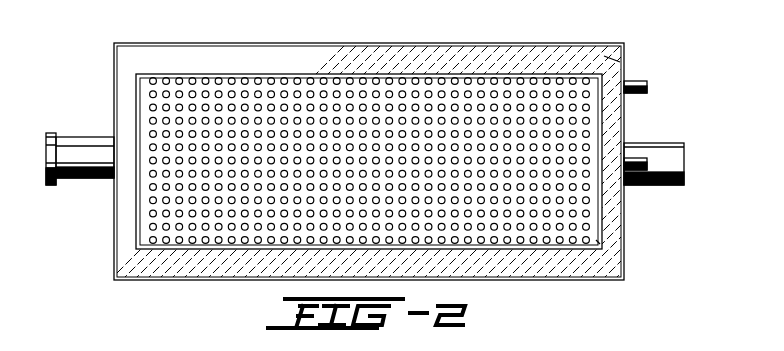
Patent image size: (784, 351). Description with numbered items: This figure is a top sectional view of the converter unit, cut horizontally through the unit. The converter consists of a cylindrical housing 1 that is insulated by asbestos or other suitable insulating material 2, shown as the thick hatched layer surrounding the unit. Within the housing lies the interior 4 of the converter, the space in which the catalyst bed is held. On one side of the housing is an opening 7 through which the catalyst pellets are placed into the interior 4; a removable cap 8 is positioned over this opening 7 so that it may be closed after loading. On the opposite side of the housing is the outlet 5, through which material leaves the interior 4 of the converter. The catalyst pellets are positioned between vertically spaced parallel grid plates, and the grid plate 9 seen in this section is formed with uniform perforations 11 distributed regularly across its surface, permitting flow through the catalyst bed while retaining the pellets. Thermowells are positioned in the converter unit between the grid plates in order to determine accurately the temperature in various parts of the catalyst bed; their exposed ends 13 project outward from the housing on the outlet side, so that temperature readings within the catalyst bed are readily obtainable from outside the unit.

The cylindrical housing 1 is at (135, 43).
The insulating material 2 is at (612, 59).
The interior 4 is at (134, 228).
The outlet 5 is at (690, 157).
The opening 7 is at (83, 178).
The removable cap 8 is at (46, 151).
The grid plate 9 is at (593, 237).
The perforations 11 is at (588, 216).
The exposed ends 13 is at (633, 160).